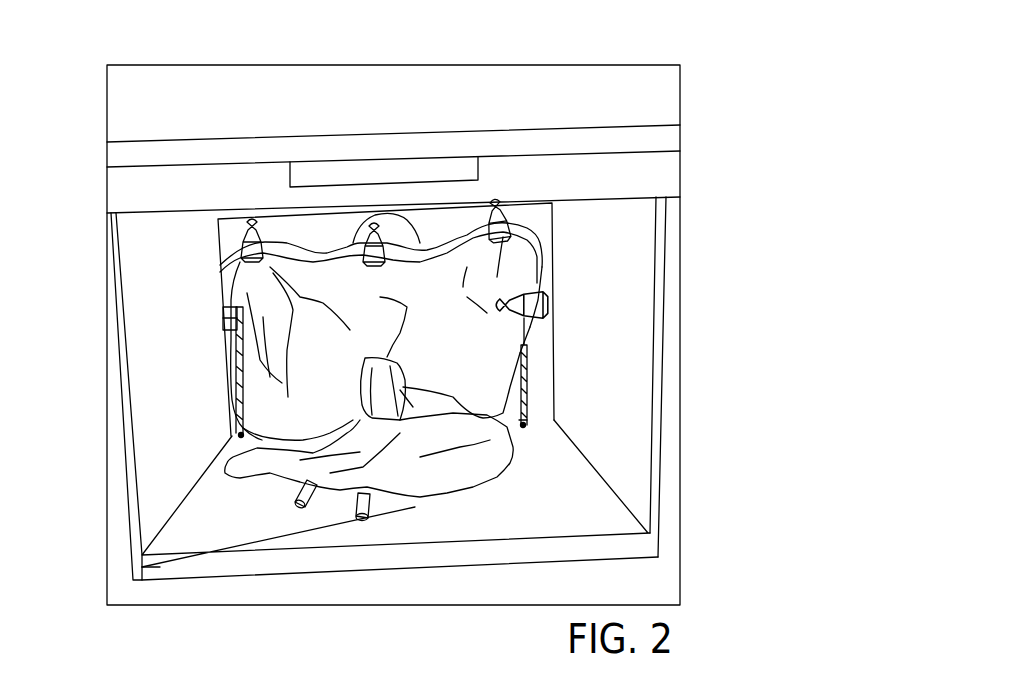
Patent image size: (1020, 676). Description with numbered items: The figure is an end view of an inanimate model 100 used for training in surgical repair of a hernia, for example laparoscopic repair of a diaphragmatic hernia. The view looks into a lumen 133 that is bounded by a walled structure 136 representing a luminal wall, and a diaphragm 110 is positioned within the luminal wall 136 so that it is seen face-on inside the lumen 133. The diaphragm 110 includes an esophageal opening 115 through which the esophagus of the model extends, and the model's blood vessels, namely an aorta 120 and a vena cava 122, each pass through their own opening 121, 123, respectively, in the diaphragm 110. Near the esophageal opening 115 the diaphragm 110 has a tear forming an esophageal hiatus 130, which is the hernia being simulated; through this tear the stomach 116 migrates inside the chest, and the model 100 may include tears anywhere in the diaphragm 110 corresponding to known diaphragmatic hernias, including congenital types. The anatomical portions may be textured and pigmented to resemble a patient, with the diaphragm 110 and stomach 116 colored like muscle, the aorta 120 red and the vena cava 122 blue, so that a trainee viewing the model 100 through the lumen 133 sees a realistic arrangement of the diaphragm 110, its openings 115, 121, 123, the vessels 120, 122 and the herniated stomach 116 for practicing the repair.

The inanimate model 100 is at (714, 138).
The walled structure 136 is at (625, 227).
The diaphragm 110 is at (452, 322).
The lumen 133 is at (527, 360).
The esophageal hiatus 130 is at (405, 386).
The esophageal opening 115 is at (523, 412).
The stomach 116 is at (490, 462).
The opening 121 is at (230, 405).
The opening 123 is at (257, 450).
The aorta 120 is at (300, 496).
The vena cava 122 is at (142, 567).